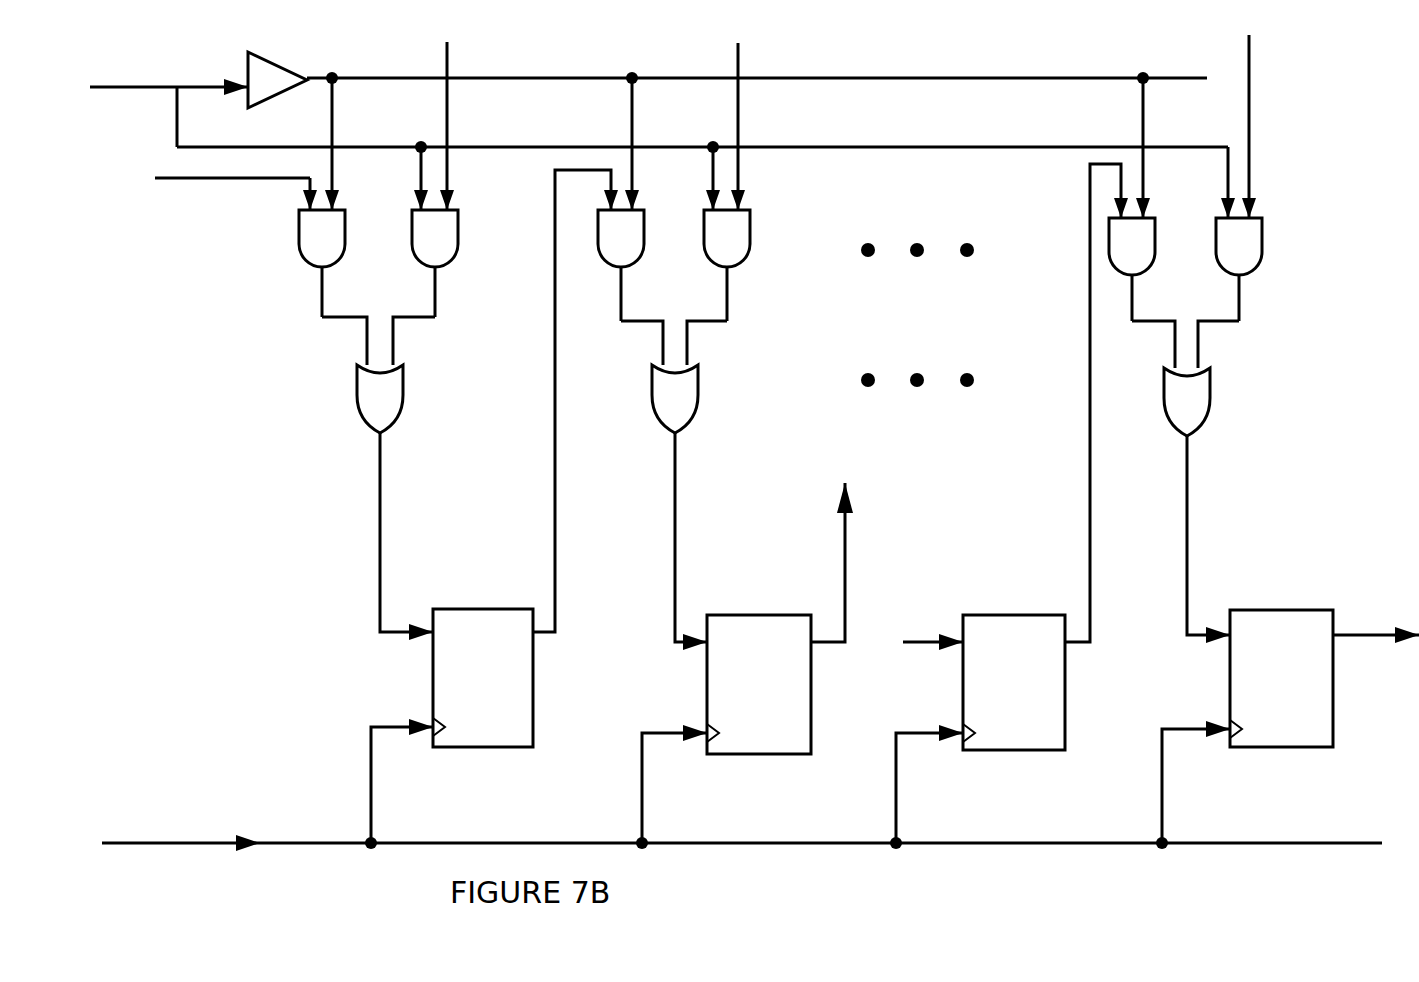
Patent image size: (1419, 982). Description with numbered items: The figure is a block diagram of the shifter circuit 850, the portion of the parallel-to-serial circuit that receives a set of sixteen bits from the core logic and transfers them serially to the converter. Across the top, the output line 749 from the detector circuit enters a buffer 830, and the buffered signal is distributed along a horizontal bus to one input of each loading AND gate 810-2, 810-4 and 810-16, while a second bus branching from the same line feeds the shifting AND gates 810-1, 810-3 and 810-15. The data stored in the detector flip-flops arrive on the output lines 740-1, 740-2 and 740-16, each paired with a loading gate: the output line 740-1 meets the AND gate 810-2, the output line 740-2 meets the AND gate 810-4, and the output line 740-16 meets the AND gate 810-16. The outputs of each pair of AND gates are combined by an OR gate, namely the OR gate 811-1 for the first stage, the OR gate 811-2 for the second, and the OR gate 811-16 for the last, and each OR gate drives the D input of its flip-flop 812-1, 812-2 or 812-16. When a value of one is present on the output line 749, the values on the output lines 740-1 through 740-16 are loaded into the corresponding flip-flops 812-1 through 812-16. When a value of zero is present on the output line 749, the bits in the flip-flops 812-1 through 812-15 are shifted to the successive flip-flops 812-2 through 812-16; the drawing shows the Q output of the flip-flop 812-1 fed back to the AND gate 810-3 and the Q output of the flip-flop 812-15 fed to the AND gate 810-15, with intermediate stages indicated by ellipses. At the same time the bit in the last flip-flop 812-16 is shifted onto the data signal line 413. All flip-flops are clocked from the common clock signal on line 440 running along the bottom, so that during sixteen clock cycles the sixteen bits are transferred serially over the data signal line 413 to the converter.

The output line 749 is at (162, 86).
The buffer 830 is at (272, 62).
The output line 740-1 is at (449, 113).
The output line 740-2 is at (737, 115).
The output line 740-16 is at (1251, 116).
The AND gate 810-1 is at (299, 240).
The AND gate 810-2 is at (458, 240).
The AND gate 810-3 is at (598, 240).
The AND gate 810-4 is at (750, 240).
The AND gate 810-15 is at (1155, 248).
The AND gate 810-16 is at (1262, 248).
The OR gate 811-1 is at (403, 378).
The OR gate 811-2 is at (697, 393).
The OR gate 811-16 is at (1210, 380).
The flip-flop 812-1 is at (533, 735).
The flip-flop 812-2 is at (811, 738).
The flip-flop 812-15 is at (1065, 738).
The flip-flop 812-16 is at (1333, 735).
The data signal line 413 is at (1356, 627).
The clock signal line 440 is at (177, 845).
The shifter circuit 850 is at (748, 884).